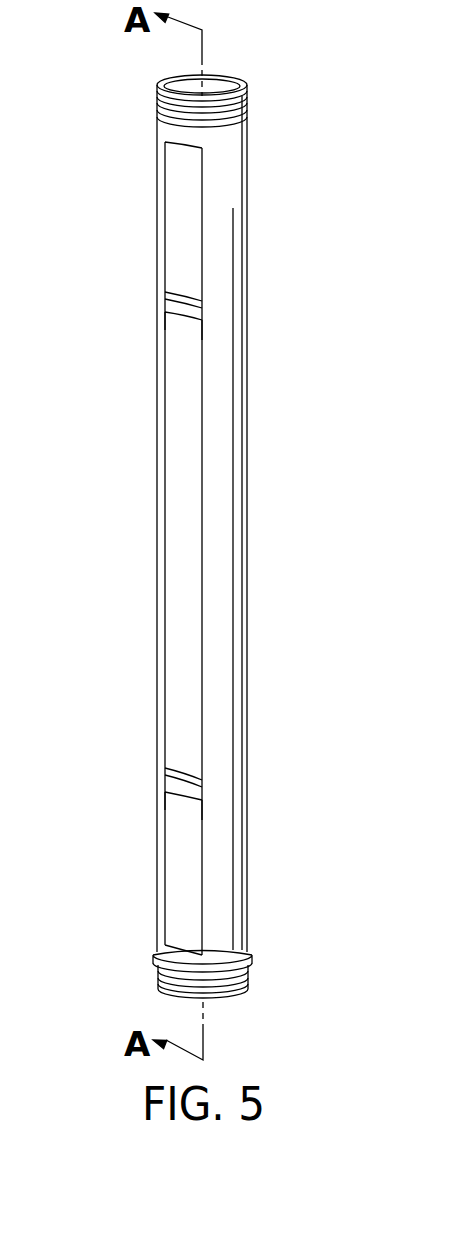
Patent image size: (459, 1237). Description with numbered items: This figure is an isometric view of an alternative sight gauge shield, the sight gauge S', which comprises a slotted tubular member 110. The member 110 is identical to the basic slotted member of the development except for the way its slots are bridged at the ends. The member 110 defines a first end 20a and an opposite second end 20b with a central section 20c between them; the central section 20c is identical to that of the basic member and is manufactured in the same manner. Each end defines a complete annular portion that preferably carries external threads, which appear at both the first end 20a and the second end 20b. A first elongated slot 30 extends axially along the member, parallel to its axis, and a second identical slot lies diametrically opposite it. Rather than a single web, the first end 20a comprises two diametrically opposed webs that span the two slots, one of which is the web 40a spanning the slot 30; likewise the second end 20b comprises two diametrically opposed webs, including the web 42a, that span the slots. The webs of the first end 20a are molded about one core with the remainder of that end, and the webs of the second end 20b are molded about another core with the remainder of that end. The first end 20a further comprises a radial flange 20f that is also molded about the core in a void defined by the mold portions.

The sight gauge S' is at (222, 536).
The second end 20b is at (256, 150).
The central section 20c is at (255, 586).
The slotted tubular member 110 is at (255, 658).
The first elongated slot 30 is at (170, 634).
The first web of second end 42a is at (177, 313).
The first web of first end 40a is at (177, 790).
The first end 20a is at (255, 901).
The radial flange 20f is at (155, 960).